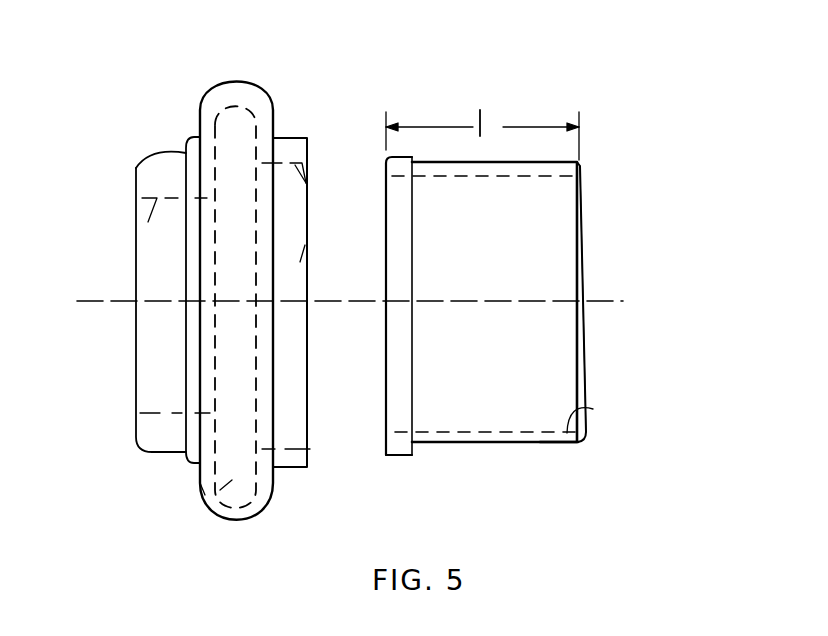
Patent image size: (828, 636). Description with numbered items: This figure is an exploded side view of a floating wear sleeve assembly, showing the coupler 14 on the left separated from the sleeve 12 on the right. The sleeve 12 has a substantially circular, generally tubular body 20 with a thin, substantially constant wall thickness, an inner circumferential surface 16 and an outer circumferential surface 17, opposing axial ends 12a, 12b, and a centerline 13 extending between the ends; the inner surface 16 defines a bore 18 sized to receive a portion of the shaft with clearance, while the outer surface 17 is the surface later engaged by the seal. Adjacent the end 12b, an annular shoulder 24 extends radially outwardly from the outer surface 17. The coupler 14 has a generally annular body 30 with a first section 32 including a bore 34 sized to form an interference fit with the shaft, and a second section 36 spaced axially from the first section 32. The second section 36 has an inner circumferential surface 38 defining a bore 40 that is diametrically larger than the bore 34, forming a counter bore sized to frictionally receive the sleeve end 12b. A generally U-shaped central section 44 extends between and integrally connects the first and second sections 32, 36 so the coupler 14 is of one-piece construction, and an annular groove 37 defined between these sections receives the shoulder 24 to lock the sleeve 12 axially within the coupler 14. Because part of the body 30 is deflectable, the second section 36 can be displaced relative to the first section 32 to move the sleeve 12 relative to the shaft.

The sleeve 12 is at (657, 396).
The axial end of sleeve 12a is at (585, 229).
The axial end of sleeve 12b is at (389, 442).
The centerline 13 is at (612, 301).
The coupler 14 is at (117, 117).
The inner circumferential surface 16 is at (504, 179).
The outer circumferential surface 17 is at (512, 401).
The bore 18 is at (601, 420).
The tubular body 20 is at (556, 444).
The annular shoulder 24 is at (403, 235).
The annular body 30 is at (146, 456).
The first section 32 is at (147, 170).
The bore 34 is at (145, 225).
The second section 36 is at (288, 140).
The annular groove 37 is at (205, 496).
The inner circumferential surface 38 is at (305, 248).
The bore 40 is at (310, 183).
The central section 44 is at (240, 82).